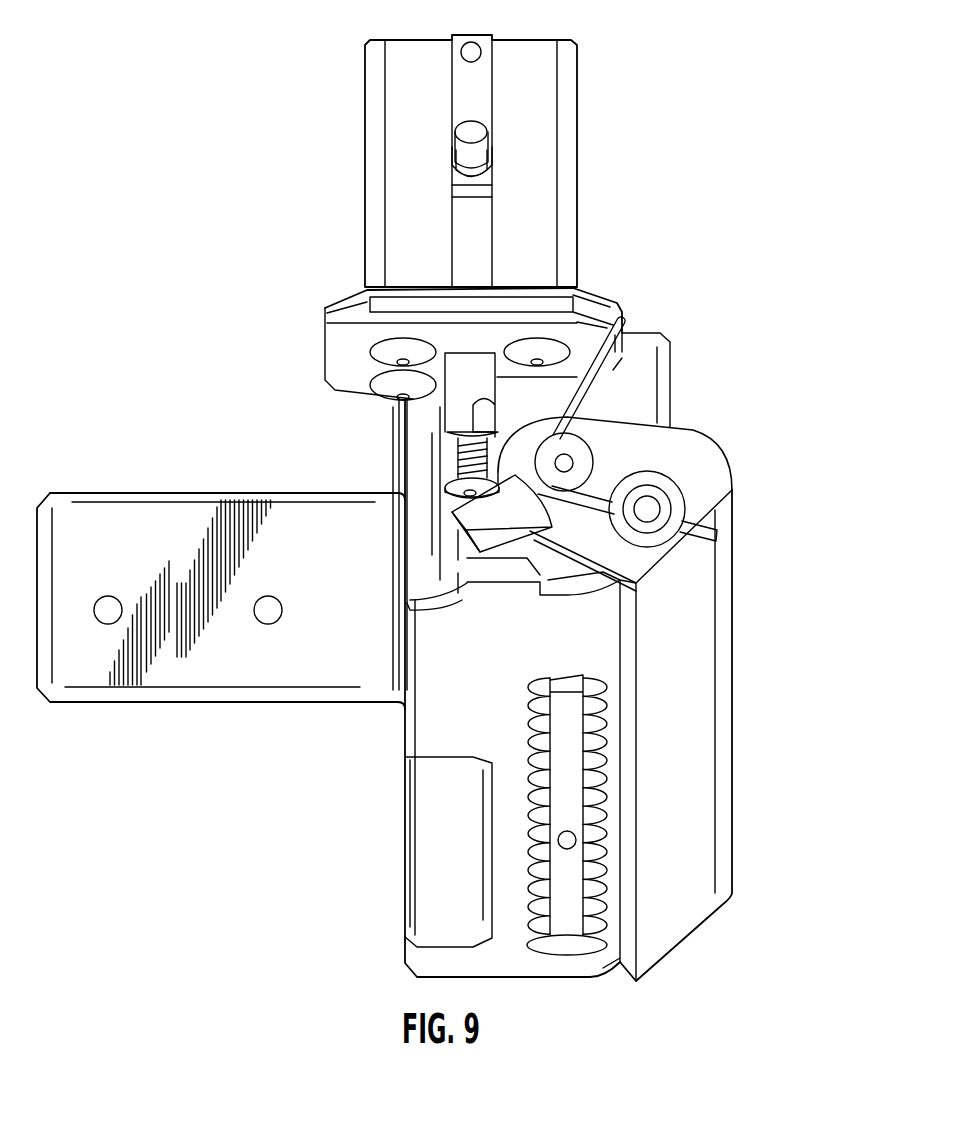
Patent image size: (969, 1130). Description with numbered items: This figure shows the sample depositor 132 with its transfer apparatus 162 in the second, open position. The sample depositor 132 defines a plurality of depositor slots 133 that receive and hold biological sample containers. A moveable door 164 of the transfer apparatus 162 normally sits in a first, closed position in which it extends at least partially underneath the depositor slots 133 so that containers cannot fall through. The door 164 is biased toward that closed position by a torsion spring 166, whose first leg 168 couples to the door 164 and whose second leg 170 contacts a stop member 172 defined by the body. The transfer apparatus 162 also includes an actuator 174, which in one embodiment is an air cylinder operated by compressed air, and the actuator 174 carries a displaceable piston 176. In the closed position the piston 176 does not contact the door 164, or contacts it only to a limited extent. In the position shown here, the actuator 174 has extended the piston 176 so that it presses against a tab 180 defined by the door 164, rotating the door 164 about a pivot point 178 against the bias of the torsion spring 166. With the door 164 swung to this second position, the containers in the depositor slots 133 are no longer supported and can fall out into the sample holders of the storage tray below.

The sample depositor 132 is at (172, 90).
The depositor slots 133 is at (537, 818).
The transfer apparatus 162 is at (631, 179).
The moveable door 164 is at (704, 904).
The torsion spring 166 is at (579, 401).
The first leg 168 is at (686, 526).
The second leg 170 is at (613, 370).
The stop member 172 is at (617, 305).
The actuator 174 is at (540, 70).
The displaceable piston 176 is at (462, 461).
The pivot point 178 is at (566, 462).
The tab 180 is at (457, 520).